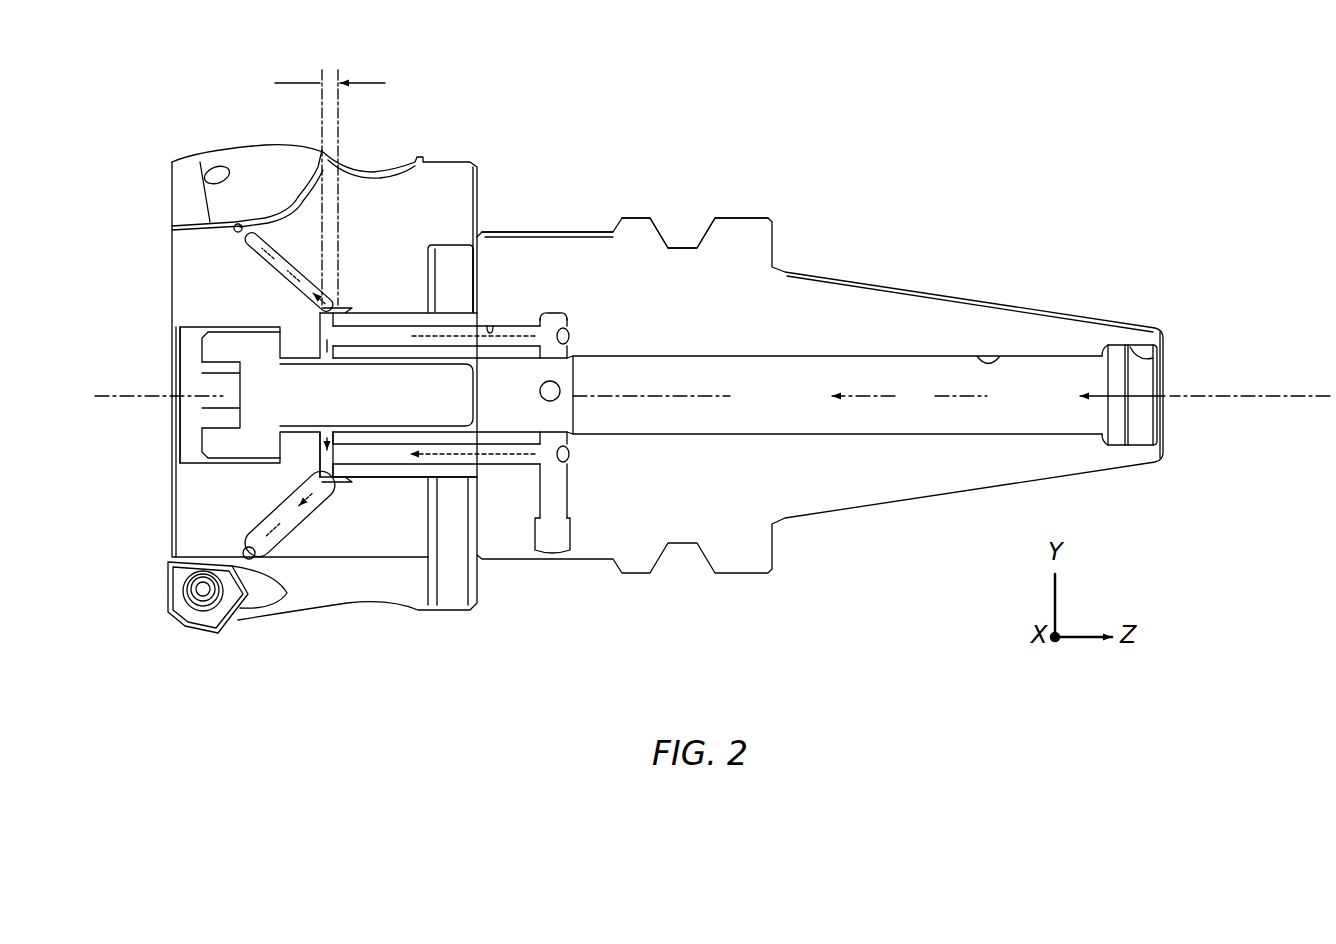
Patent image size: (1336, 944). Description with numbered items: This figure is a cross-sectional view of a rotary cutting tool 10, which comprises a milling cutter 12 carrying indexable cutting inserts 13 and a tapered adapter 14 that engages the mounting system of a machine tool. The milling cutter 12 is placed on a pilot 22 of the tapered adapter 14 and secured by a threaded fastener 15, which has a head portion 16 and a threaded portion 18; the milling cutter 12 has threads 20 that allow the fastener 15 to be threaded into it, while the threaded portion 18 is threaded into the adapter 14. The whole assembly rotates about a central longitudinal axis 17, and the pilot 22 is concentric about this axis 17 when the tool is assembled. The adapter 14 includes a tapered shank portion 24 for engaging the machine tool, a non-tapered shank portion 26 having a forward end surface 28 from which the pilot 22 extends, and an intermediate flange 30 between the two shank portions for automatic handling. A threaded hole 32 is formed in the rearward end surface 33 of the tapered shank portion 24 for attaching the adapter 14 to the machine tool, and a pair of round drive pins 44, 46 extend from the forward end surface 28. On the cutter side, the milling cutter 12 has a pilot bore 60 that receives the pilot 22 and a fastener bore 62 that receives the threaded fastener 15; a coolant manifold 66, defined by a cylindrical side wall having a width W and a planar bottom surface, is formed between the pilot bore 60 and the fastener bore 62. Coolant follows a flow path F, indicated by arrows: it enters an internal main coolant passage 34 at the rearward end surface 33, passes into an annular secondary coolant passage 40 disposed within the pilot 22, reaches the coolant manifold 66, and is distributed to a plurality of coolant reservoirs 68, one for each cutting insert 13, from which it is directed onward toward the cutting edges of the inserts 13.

The rotary cutting tool 10 is at (698, 95).
The milling cutter 12 is at (443, 73).
The cutting insert 13 is at (178, 628).
The tapered adapter 14 is at (1003, 197).
The threaded fastener 15 is at (197, 443).
The head portion 16 is at (222, 458).
The central longitudinal axis 17 is at (104, 392).
The threaded portion 18 is at (400, 443).
The threads 20 is at (392, 376).
The pilot 22 is at (373, 488).
The tapered shank portion 24 is at (920, 286).
The non-tapered shank portion 26 is at (560, 230).
The forward end surface 28 is at (470, 262).
The intermediate flange 30 is at (733, 207).
The threaded hole 32 is at (1155, 360).
The rearward end surface 33 is at (1165, 333).
The internal main coolant passage 34 is at (1000, 362).
The secondary coolant passage 40 is at (490, 326).
The drive pin 44 is at (452, 540).
The drive pin 46 is at (445, 272).
The pilot bore 60 is at (452, 498).
The fastener bore 62 is at (192, 346).
The coolant manifold 66 is at (318, 454).
The coolant reservoir 68 is at (248, 262).
The width W is at (319, 186).
The coolant flow path F is at (876, 396).